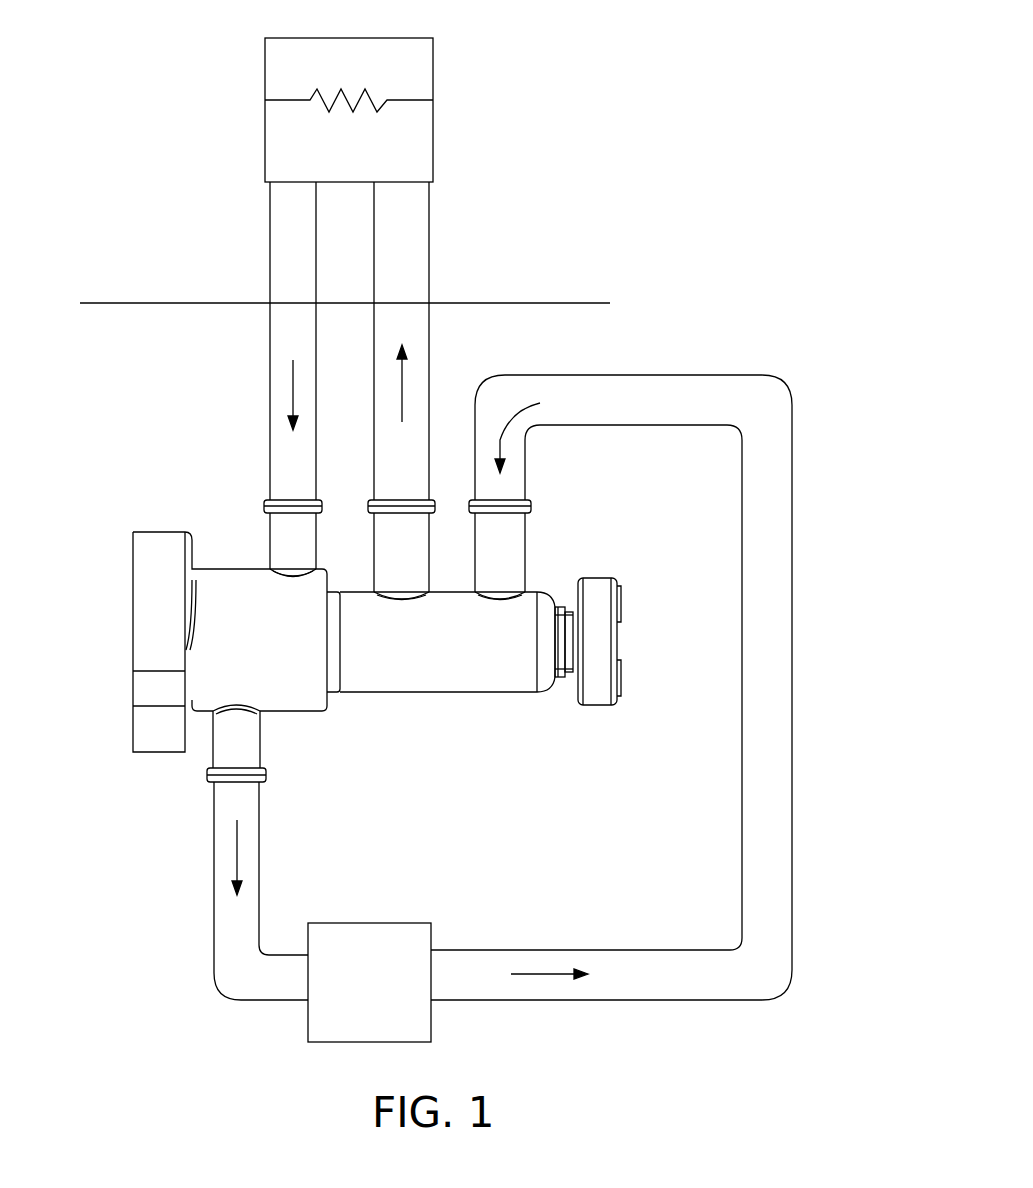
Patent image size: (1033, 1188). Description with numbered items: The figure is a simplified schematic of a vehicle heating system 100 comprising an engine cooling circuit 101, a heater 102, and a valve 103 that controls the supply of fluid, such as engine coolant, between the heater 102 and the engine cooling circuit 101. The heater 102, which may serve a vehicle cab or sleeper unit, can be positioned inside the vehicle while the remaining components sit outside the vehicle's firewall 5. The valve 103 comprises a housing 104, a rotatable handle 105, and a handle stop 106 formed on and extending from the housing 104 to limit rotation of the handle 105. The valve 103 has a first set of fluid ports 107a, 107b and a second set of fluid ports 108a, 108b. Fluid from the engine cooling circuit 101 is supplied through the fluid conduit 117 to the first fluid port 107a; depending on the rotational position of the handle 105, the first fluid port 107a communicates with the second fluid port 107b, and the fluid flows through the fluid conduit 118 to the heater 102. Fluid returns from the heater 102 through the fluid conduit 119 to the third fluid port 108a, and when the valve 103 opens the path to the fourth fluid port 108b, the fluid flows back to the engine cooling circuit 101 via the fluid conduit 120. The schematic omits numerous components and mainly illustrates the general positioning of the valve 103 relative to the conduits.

The vehicle heating system 100 is at (652, 82).
The engine cooling circuit 101 is at (430, 1018).
The heater 102 is at (430, 62).
The valve 103 is at (105, 500).
The housing 104 is at (468, 688).
The rotatable handle 105 is at (600, 585).
The handle stop 106 is at (562, 590).
The first fluid port 107a is at (523, 537).
The second fluid port 107b is at (372, 536).
The third fluid port 108a is at (268, 536).
The fourth fluid port 108b is at (250, 745).
The fluid conduit 117 is at (683, 375).
The fluid conduit 118 is at (423, 268).
The fluid conduit 119 is at (275, 275).
The fluid conduit 120 is at (218, 928).
The firewall 5 is at (575, 302).